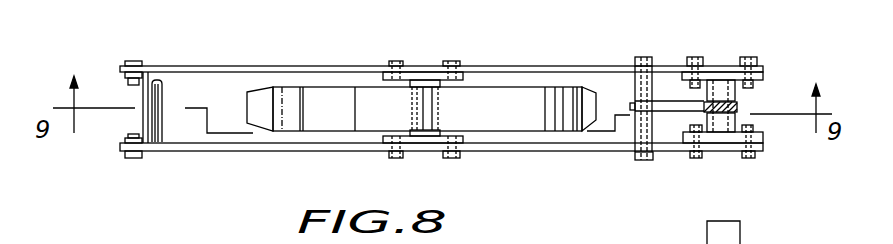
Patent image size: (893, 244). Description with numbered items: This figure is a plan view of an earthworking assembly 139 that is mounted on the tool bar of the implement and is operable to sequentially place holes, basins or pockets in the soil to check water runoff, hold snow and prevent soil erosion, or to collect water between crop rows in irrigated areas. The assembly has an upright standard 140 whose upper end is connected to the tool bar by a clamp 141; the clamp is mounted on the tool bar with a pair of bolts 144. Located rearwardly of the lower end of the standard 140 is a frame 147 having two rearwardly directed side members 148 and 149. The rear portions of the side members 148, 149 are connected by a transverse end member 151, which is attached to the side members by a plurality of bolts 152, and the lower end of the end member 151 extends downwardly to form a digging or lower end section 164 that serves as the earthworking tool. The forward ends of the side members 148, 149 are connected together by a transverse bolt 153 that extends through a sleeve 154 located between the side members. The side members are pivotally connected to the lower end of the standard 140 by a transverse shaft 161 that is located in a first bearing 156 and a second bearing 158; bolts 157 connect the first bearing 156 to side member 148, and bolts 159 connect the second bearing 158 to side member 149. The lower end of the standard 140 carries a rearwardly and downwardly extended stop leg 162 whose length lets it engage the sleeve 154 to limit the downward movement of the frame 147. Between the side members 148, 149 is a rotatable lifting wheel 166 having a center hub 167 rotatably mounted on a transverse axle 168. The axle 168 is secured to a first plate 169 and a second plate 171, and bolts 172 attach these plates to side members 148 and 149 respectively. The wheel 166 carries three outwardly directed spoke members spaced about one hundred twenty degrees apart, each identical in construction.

The earthworking assembly 139 is at (245, 48).
The upright standard 140 is at (737, 107).
The clamp 141 is at (662, 243).
The bolts 144 is at (778, 243).
The frame 147 is at (245, 153).
The side member 148 is at (337, 65).
The side member 149 is at (322, 153).
The transverse end member 151 is at (143, 117).
The bolts 152 is at (133, 60).
The transverse bolt 153 is at (645, 57).
The sleeve 154 is at (635, 83).
The first bearing 156 is at (762, 75).
The bolts 157 is at (755, 60).
The second bearing 158 is at (762, 137).
The bolts 159 is at (753, 157).
The transverse shaft 161 is at (713, 78).
The stop leg 162 is at (668, 112).
The digging or lower end section 164 is at (160, 95).
The rotatable lifting wheel 166 is at (528, 63).
The center hub 167 is at (443, 108).
The transverse axle 168 is at (415, 83).
The first plate 169 is at (383, 75).
The second plate 171 is at (408, 142).
The bolts 172 is at (453, 62).